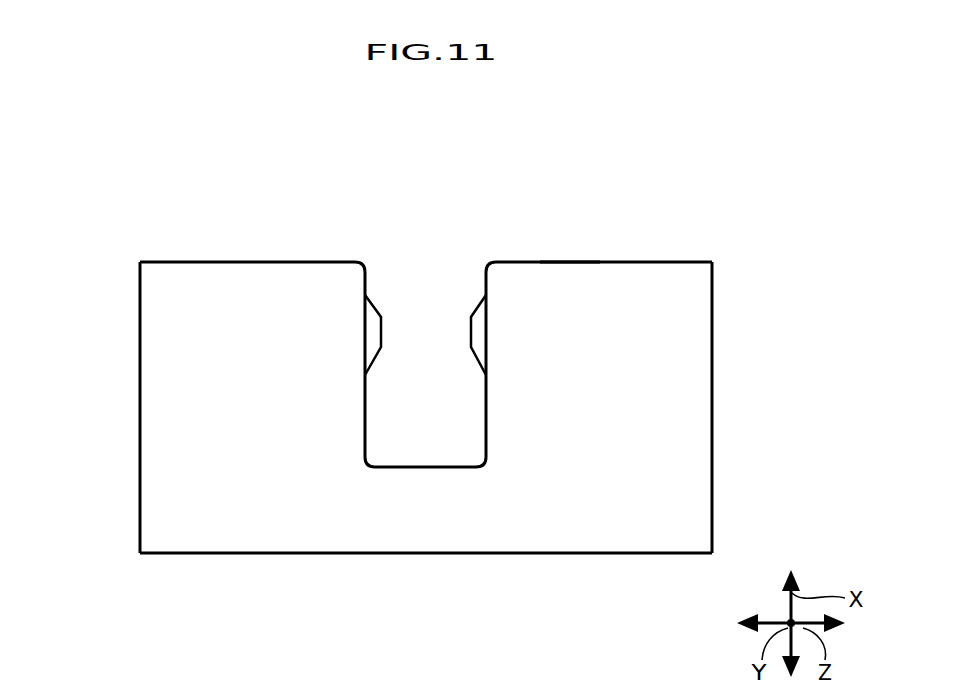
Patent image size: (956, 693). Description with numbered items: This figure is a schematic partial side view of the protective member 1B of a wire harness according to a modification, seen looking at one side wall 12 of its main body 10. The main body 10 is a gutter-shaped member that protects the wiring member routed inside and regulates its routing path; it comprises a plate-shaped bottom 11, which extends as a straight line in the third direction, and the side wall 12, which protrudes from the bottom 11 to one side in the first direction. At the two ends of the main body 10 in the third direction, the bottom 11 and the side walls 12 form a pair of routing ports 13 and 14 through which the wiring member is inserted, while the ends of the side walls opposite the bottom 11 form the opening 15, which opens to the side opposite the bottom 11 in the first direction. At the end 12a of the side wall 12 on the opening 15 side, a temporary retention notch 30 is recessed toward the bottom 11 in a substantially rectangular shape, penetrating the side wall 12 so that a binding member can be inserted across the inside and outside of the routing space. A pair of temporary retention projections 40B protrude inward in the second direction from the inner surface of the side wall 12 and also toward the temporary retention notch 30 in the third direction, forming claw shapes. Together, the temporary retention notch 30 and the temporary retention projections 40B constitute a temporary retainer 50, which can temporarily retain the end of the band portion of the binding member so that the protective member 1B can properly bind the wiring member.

The protective member 1B is at (190, 194).
The main body 10 is at (80, 370).
The bottom 11 is at (568, 554).
The side wall 12 is at (650, 273).
The end of the side wall 12a is at (295, 262).
The routing port 13 is at (716, 433).
The routing port 14 is at (134, 433).
The opening 15 is at (562, 261).
The temporary retention notch 30 is at (365, 430).
The temporary retention projection 40B is at (372, 337).
The temporary retainer 50 is at (438, 197).